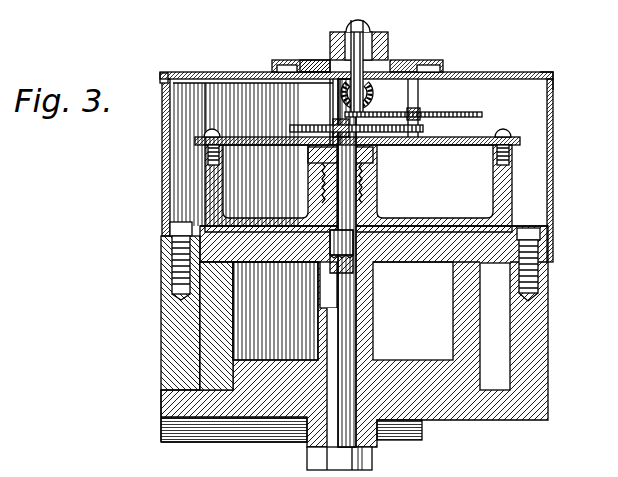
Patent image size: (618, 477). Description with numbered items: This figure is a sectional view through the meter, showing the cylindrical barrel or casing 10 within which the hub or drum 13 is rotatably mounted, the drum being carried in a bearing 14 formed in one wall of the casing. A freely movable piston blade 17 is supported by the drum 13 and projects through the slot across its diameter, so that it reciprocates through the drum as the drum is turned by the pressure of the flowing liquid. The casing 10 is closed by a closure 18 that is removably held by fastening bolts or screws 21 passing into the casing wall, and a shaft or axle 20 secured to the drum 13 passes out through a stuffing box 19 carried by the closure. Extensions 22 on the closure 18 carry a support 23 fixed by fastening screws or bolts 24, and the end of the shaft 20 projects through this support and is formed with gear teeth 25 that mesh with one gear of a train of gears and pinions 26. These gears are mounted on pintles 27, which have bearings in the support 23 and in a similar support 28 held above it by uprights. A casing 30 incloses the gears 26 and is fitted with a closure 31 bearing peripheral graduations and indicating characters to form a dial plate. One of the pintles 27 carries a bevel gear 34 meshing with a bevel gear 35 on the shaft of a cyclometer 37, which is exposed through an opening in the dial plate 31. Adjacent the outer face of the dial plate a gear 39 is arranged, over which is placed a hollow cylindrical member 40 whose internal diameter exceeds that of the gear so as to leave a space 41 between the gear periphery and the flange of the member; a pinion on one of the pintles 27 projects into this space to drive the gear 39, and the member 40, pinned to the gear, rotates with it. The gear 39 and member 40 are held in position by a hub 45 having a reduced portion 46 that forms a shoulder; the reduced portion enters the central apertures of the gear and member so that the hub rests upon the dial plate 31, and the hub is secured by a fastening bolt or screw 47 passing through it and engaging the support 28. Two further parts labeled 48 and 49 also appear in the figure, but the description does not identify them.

The casing 10 is at (168, 334).
The hub or drum 13 is at (462, 320).
The bearing 14 is at (337, 420).
The blade 17 is at (346, 300).
The closure 18 is at (432, 226).
The stuffing box 19 is at (356, 212).
The shaft or axle 20 is at (352, 190).
The fastening bolts or screws 21 is at (178, 246).
The extensions 22 is at (210, 202).
The support 23 is at (258, 135).
The fastening screws or bolts 24 is at (204, 132).
The gear teeth 25 is at (330, 128).
The train of gears and pinions 26 is at (462, 114).
The pintles 27 is at (420, 108).
The support 28 is at (474, 76).
The casing 30 is at (554, 176).
The closure 31 is at (553, 72).
The bevel gear 34 is at (393, 66).
The bevel gear 35 is at (372, 95).
The cyclometer 37 is at (372, 109).
The gear 39 is at (311, 65).
The hollow cylindrical member 40 is at (288, 62).
The space 41 is at (284, 67).
The hub 45 is at (349, 36).
The reduced portion 46 is at (333, 86).
The fastening bolt or screw 47 is at (366, 22).
The bearing block 48 is at (386, 46).
The cap 49 is at (372, 30).